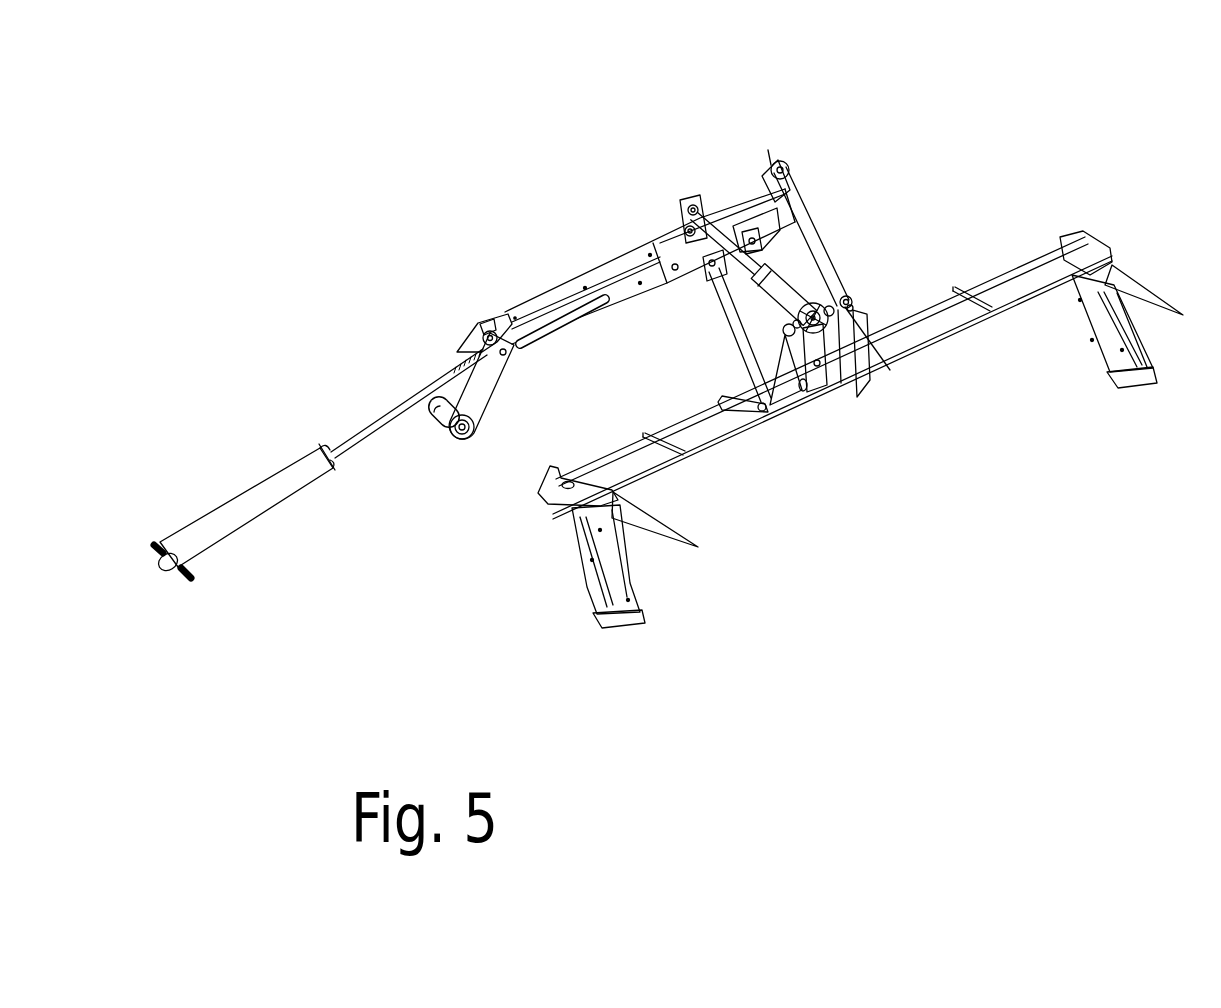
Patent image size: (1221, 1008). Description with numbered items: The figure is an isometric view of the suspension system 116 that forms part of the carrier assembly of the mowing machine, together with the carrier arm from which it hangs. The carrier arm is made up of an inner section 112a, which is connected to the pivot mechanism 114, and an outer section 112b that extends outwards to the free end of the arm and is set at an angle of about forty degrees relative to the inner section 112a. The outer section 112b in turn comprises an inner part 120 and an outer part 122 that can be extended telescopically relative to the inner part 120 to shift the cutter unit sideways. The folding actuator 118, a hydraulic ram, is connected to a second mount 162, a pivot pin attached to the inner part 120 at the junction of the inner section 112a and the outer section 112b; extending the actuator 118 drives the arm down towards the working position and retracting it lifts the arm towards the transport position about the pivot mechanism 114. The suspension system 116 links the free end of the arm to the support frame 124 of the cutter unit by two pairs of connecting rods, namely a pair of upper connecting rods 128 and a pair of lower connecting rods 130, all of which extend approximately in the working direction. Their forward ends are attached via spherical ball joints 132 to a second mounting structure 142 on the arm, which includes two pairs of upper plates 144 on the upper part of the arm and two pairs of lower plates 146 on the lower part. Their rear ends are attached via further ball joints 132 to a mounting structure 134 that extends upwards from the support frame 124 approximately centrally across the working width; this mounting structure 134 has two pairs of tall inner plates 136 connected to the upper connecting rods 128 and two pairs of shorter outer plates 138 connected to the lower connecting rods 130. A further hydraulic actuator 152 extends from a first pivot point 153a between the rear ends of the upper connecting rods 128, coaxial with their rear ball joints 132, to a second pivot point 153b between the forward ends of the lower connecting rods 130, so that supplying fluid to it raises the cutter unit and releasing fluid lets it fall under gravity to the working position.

The inner section 112a is at (480, 397).
The outer section 112b is at (512, 312).
The pivot mechanism 114 is at (443, 410).
The suspension system 116 is at (872, 205).
The actuator 118 is at (272, 493).
The inner part 120 is at (543, 303).
The outer part 122 is at (723, 223).
The support frame 124 is at (1015, 278).
The upper connecting rods 128 is at (685, 234).
The lower connecting rods 130 is at (728, 293).
The ball joints 132 is at (688, 208).
The mounting structure 134 is at (808, 380).
The inner plates 136 is at (780, 363).
The outer plates 138 is at (732, 400).
The second mounting structure 142 is at (790, 148).
The upper plates 144 is at (765, 180).
The lower plates 146 is at (690, 272).
The actuator 152 is at (787, 283).
The first pivot point 153a is at (851, 368).
The second pivot point 153b is at (730, 222).
The second mount 162 is at (528, 347).